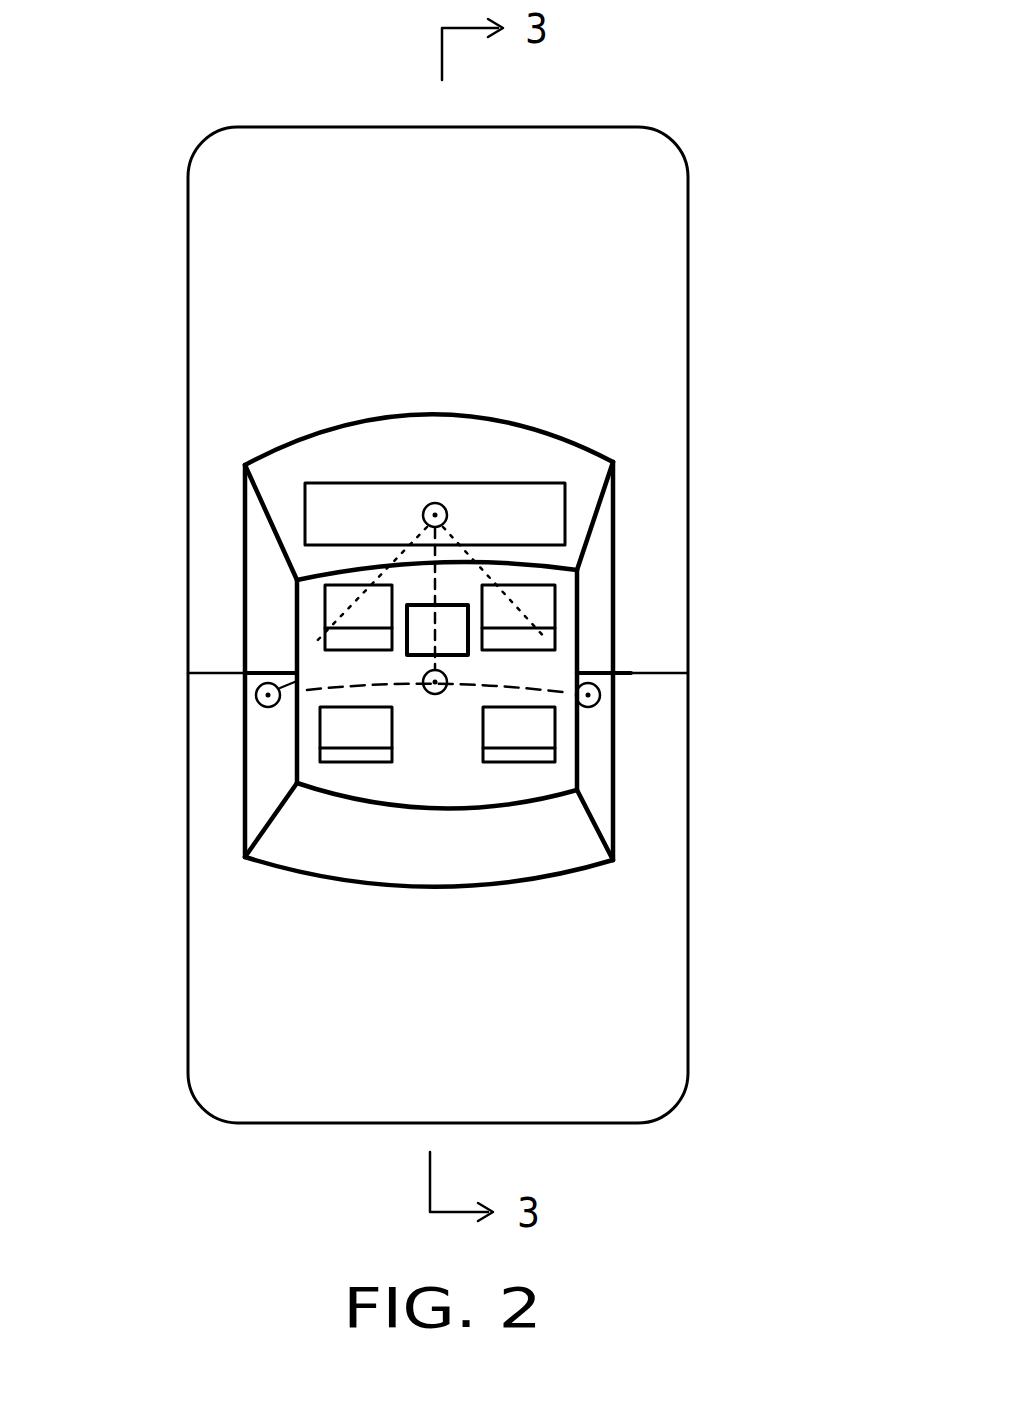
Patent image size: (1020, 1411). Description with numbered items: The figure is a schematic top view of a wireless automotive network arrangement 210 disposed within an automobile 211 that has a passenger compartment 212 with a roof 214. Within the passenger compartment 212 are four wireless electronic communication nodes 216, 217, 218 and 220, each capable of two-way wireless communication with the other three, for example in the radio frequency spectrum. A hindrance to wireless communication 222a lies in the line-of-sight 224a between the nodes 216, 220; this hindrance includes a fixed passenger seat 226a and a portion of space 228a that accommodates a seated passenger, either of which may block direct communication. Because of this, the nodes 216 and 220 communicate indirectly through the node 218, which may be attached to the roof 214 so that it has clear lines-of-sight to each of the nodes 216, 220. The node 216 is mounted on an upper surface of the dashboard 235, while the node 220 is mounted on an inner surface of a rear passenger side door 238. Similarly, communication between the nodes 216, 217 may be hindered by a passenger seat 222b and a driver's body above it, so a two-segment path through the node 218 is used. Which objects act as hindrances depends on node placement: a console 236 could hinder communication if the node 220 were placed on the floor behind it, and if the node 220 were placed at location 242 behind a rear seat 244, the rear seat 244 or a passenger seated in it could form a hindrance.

The wireless automotive network arrangement 210 is at (150, 1183).
The automobile 211 is at (188, 250).
The passenger compartment 212 is at (515, 443).
The roof 214 is at (427, 812).
The wireless electronic communication node 216 is at (435, 502).
The wireless electronic communication node 217 is at (256, 705).
The wireless electronic communication node 218 is at (434, 695).
The wireless electronic communication node 220 is at (600, 693).
The hindrance to wireless communication 222a is at (555, 618).
The passenger seat 222b is at (325, 612).
The line-of-sight 224a is at (470, 553).
The fixed passenger seat 226a is at (577, 637).
The portion of space 228a is at (577, 570).
The dashboard 235 is at (313, 507).
The console 236 is at (418, 603).
The rear passenger side door 238 is at (598, 787).
The location 242 is at (533, 760).
The rear seat 244 is at (517, 785).